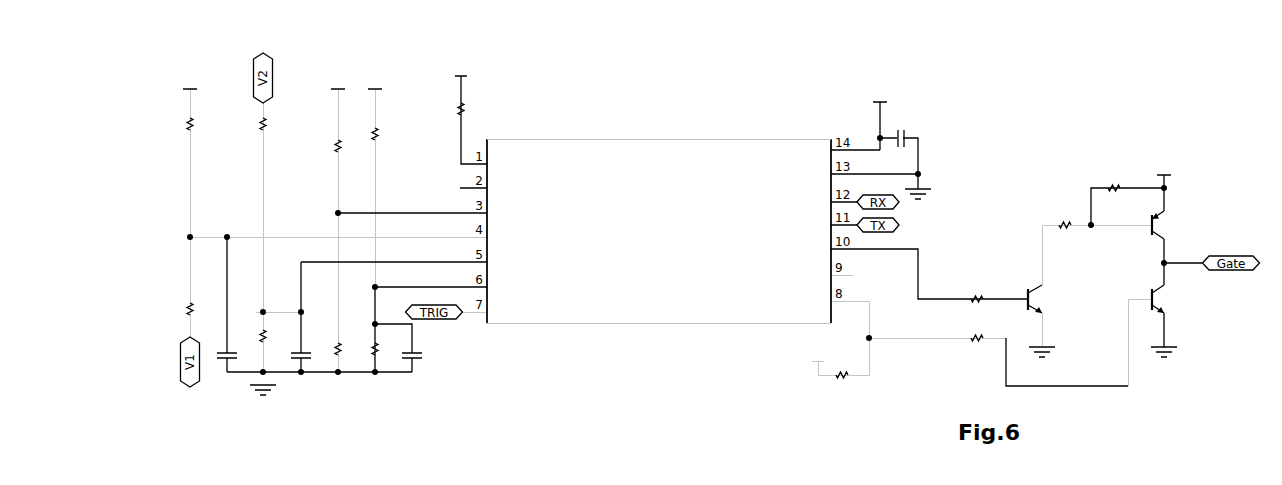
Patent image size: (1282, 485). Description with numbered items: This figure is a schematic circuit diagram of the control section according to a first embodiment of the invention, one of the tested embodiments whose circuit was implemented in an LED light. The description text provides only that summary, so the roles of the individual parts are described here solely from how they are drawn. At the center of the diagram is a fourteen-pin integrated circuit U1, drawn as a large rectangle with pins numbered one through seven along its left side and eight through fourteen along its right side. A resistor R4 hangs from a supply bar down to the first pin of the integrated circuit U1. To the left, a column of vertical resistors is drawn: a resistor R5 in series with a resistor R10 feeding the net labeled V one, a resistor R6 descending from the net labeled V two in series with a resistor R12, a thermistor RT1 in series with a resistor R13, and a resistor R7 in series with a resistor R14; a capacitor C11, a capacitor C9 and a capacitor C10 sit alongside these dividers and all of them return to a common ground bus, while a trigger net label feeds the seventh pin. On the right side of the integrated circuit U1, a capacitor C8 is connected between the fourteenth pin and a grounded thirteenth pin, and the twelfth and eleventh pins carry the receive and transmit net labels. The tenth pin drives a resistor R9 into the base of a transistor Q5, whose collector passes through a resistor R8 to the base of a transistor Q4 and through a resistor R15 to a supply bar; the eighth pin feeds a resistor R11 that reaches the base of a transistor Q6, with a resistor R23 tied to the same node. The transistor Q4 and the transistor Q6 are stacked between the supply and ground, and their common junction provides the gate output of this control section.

The integrated circuit U1 is at (659, 223).
The resistor R4 is at (469, 110).
The resistor R5 is at (181, 124).
The resistor R6 is at (254, 124).
The resistor R7 is at (366, 134).
The thermistor RT1 is at (329, 147).
The resistor R10 is at (181, 310).
The resistor R12 is at (254, 337).
The resistor R13 is at (329, 345).
The resistor R14 is at (366, 345).
The capacitor C11 is at (222, 341).
The capacitor C9 is at (296, 347).
The capacitor C10 is at (407, 345).
The capacitor C8 is at (900, 130).
The resistor R9 is at (978, 292).
The resistor R11 is at (978, 331).
The resistor R23 is at (843, 368).
The resistor R8 is at (1062, 218).
The resistor R15 is at (1112, 180).
The transistor Q5 is at (1041, 299).
The transistor Q4 is at (1165, 225).
The transistor Q6 is at (1165, 299).